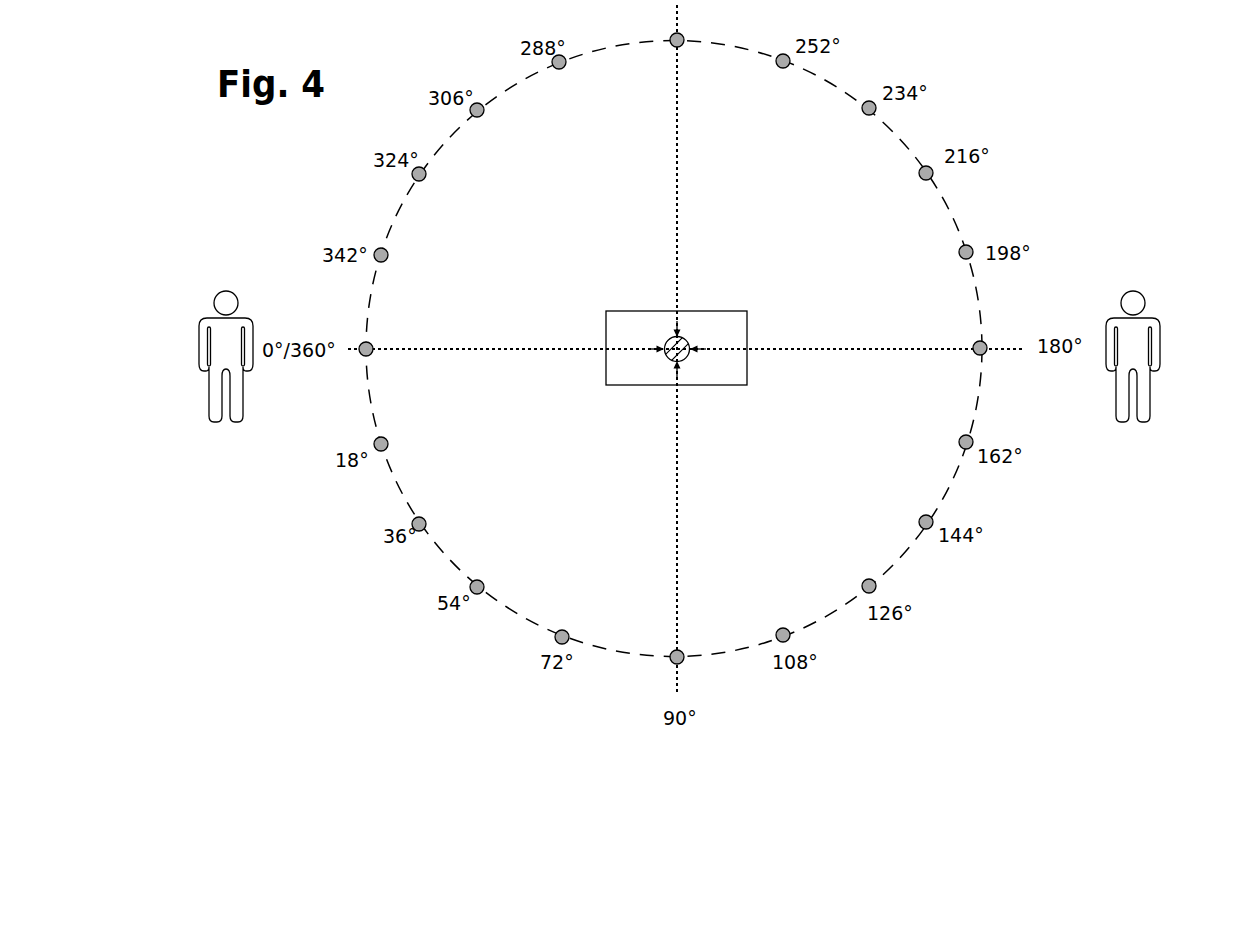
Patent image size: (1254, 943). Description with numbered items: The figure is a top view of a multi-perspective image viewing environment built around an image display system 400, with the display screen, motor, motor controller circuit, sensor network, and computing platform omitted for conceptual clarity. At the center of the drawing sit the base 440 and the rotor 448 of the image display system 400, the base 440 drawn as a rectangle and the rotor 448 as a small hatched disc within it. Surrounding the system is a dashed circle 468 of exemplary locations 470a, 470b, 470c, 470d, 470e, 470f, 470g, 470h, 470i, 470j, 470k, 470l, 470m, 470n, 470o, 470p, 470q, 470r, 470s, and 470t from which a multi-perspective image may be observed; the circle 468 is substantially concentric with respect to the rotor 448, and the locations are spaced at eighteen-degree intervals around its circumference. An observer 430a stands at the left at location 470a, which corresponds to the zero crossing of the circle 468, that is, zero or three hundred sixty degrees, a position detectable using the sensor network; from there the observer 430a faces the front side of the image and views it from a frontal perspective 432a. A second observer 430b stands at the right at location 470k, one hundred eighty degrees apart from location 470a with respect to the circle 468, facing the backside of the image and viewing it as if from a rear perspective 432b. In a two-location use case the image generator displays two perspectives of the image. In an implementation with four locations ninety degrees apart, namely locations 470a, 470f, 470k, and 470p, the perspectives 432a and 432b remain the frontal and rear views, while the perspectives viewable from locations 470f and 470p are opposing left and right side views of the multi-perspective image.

The image display system 400 is at (619, 284).
The base 440 is at (747, 379).
The rotor 448 is at (688, 336).
The circle 468 is at (948, 599).
The observer 430a is at (197, 348).
The observer 430b is at (1162, 348).
The perspective 432a is at (453, 352).
The perspective 432b is at (900, 352).
The location 470a is at (370, 355).
The location 470b is at (387, 441).
The location 470c is at (425, 518).
The location 470d is at (483, 582).
The location 470e is at (568, 631).
The location 470f is at (682, 653).
The location 470g is at (783, 628).
The location 470h is at (871, 580).
The location 470i is at (925, 517).
The location 470j is at (962, 440).
The location 470k is at (978, 356).
The location 470l is at (961, 258).
The location 470m is at (931, 179).
The location 470n is at (868, 115).
The location 470o is at (783, 68).
The location 470p is at (670, 43).
The location 470q is at (564, 68).
The location 470r is at (478, 117).
The location 470s is at (422, 181).
The location 470t is at (386, 259).